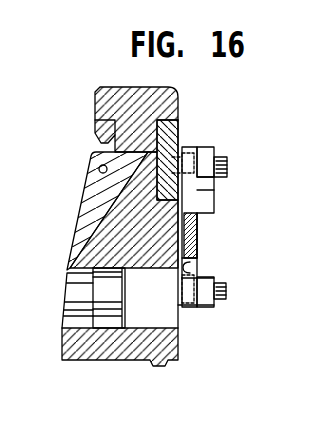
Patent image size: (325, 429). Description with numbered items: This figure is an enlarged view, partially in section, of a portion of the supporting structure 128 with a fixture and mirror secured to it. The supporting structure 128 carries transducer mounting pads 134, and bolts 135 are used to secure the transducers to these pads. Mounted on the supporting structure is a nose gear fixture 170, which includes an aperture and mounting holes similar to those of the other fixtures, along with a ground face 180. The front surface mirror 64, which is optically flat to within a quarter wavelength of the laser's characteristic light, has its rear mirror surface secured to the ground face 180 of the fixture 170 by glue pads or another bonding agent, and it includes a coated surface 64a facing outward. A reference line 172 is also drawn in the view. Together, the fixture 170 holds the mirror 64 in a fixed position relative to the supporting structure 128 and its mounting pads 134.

The supporting structure 128 is at (118, 348).
The transducer mounting pads 134 is at (183, 147).
The nose gear fixture 170 is at (199, 148).
The bolts 135 is at (222, 157).
The front surface mirror 64 is at (190, 197).
The coated surface 64a is at (198, 242).
The reference plane 172 is at (216, 205).
The ground face 180 is at (190, 268).